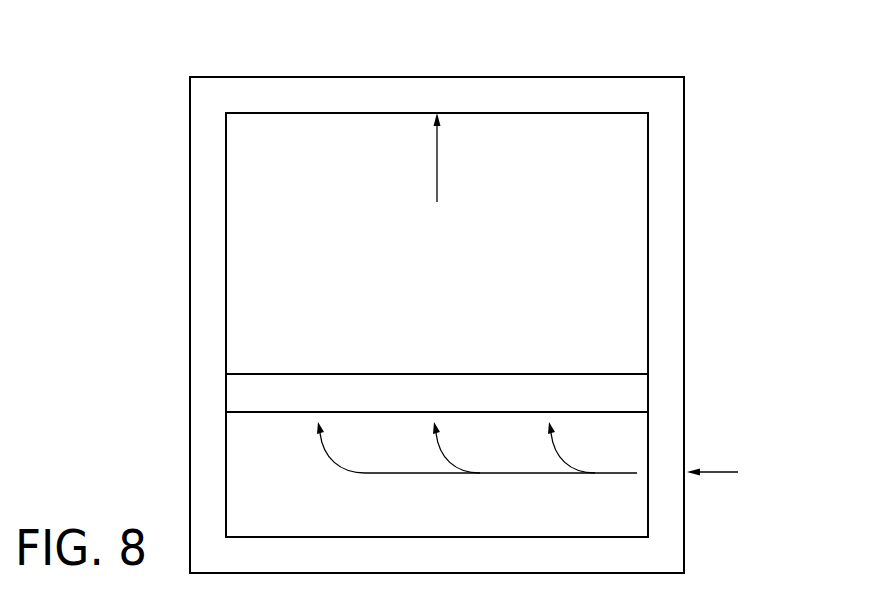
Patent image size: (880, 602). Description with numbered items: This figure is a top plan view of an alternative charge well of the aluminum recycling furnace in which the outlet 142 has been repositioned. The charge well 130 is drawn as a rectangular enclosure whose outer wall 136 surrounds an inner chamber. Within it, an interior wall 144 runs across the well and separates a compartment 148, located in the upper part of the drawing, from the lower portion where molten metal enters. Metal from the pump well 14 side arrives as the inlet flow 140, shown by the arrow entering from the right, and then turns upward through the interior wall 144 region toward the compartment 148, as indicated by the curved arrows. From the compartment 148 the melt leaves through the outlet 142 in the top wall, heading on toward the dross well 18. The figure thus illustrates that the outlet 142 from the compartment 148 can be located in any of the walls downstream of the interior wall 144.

The pump well 14 is at (750, 532).
The dross well 18 is at (451, 46).
The housing 130 is at (669, 188).
The outer wall 136 is at (585, 87).
The inlet airflow 140 is at (727, 472).
The outlet 142 is at (496, 70).
The interior wall 144 is at (518, 383).
The compartment 148 is at (458, 270).